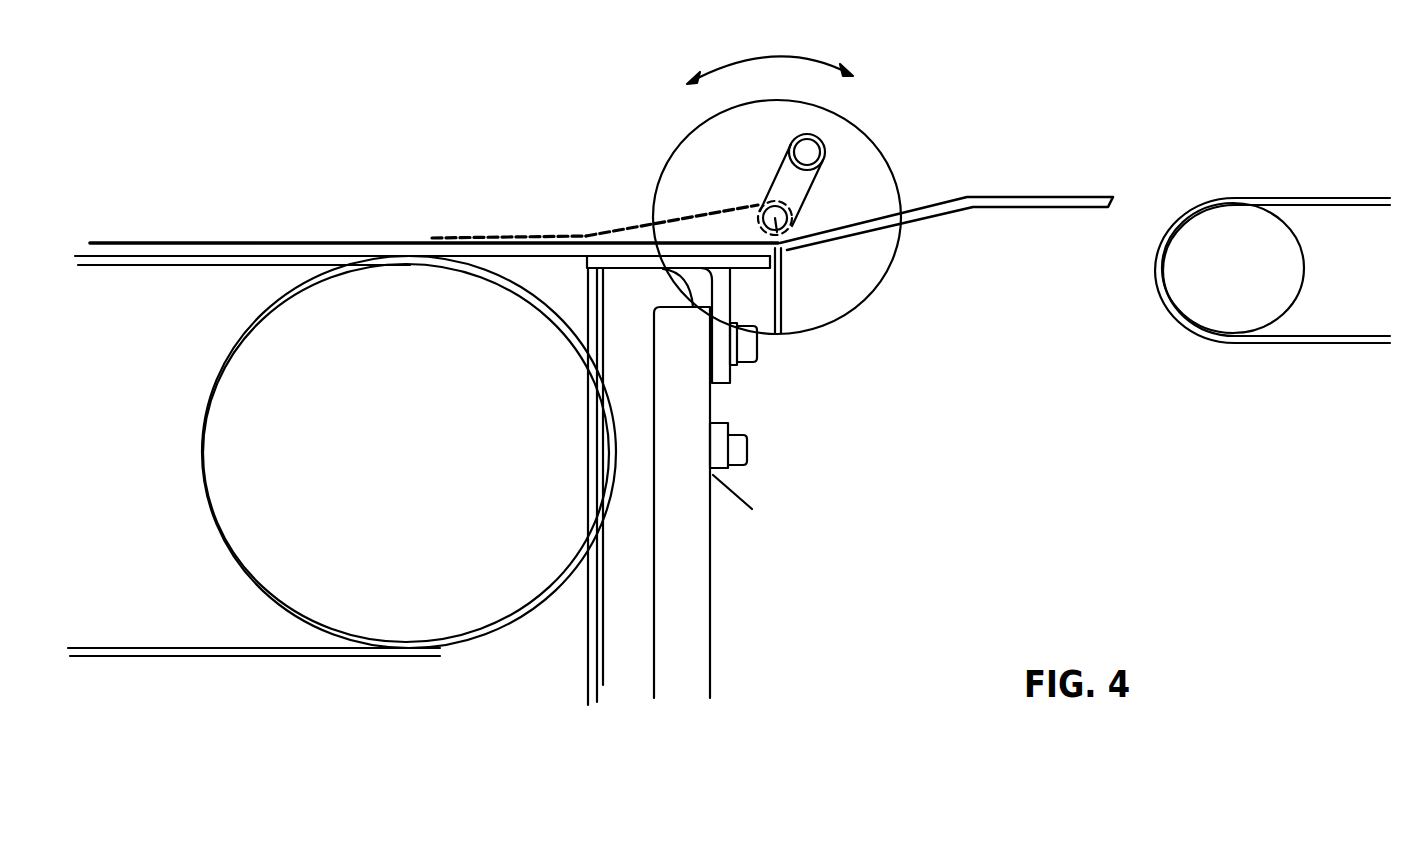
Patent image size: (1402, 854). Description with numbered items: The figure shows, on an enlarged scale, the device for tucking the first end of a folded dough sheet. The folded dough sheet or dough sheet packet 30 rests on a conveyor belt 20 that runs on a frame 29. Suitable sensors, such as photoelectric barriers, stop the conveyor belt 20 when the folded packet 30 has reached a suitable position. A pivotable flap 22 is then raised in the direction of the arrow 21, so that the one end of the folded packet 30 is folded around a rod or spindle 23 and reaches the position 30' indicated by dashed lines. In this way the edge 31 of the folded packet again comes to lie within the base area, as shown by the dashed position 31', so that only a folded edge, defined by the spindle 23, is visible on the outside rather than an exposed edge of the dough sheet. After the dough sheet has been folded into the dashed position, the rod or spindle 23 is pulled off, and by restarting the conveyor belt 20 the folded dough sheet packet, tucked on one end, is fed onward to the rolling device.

The conveyor belt 20 is at (418, 652).
The arrow 21 is at (813, 60).
The flap 22 is at (883, 238).
The rod or spindle 23 is at (782, 250).
The frame 29 is at (685, 632).
The folded dough sheet packet 30 is at (946, 167).
The tucked end position 30' is at (635, 178).
The edge of the folded packet 31 is at (1250, 215).
The tucked edge position 31' is at (482, 179).